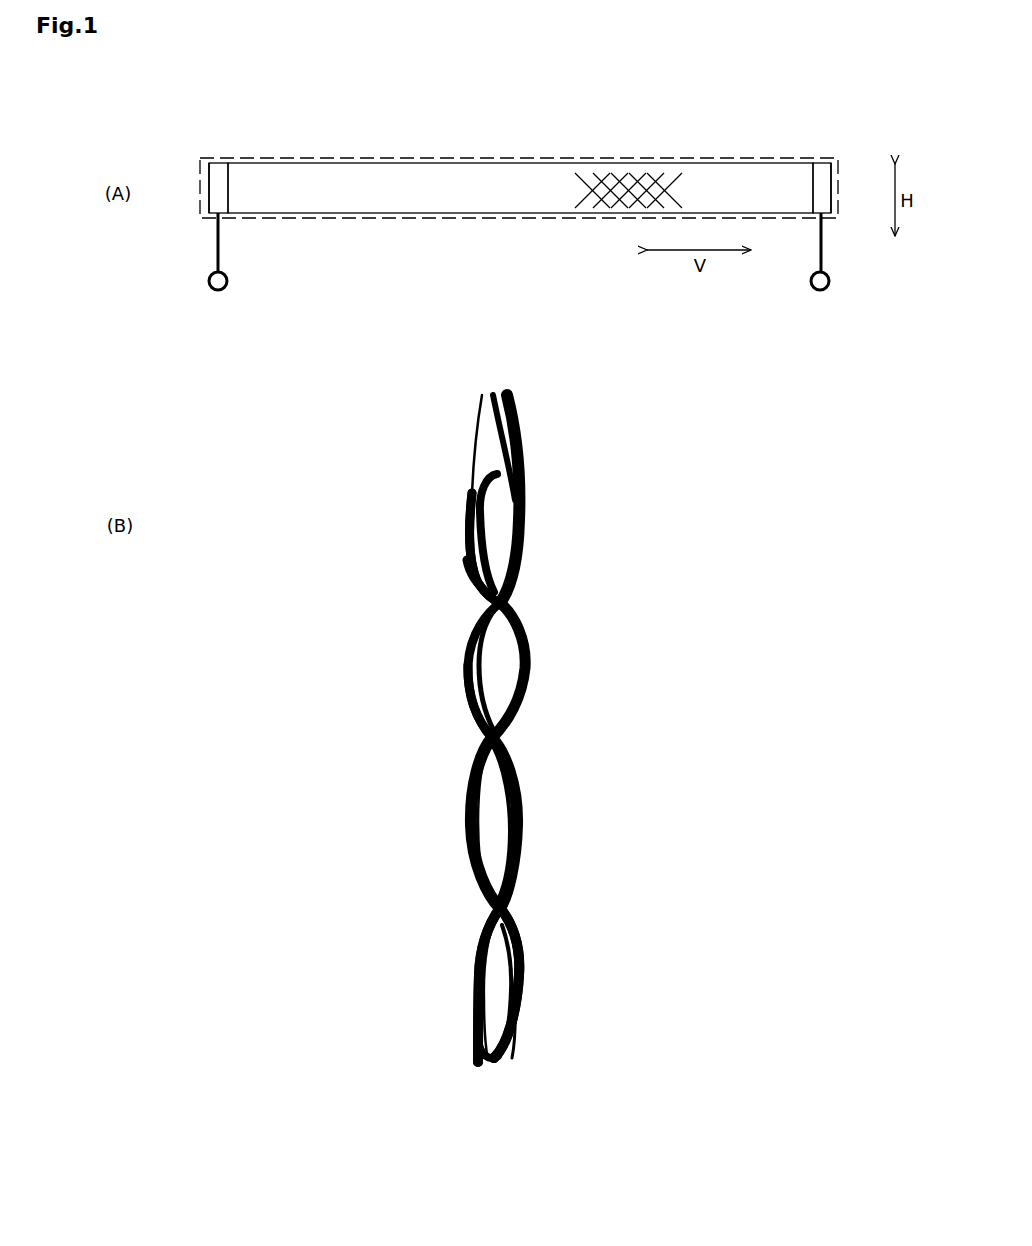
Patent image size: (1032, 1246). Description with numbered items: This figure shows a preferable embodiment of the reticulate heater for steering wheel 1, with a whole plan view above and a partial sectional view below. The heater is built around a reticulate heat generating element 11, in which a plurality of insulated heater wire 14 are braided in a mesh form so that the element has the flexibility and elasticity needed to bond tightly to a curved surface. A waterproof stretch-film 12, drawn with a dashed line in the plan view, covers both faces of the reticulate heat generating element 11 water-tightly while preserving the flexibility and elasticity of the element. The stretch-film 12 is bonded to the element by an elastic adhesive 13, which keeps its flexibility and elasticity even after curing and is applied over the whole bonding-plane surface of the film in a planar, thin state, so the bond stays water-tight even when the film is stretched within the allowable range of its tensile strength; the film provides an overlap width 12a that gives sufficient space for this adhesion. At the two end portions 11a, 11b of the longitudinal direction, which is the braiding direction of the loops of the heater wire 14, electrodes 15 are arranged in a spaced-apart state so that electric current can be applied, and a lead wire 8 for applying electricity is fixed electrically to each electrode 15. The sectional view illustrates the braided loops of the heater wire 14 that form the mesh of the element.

The reticulate heater for steering wheel 1 is at (536, 86).
The lead wire 8 is at (214, 246).
The reticulate heat generating element 11 is at (588, 210).
The end portion 11a is at (218, 160).
The end portion 11b is at (822, 160).
The stretch-film 12 is at (417, 222).
The overlap width 12a is at (205, 193).
The elastic adhesive 13 is at (492, 525).
The heater wire 14 is at (520, 452).
The electrode 15 is at (213, 180).